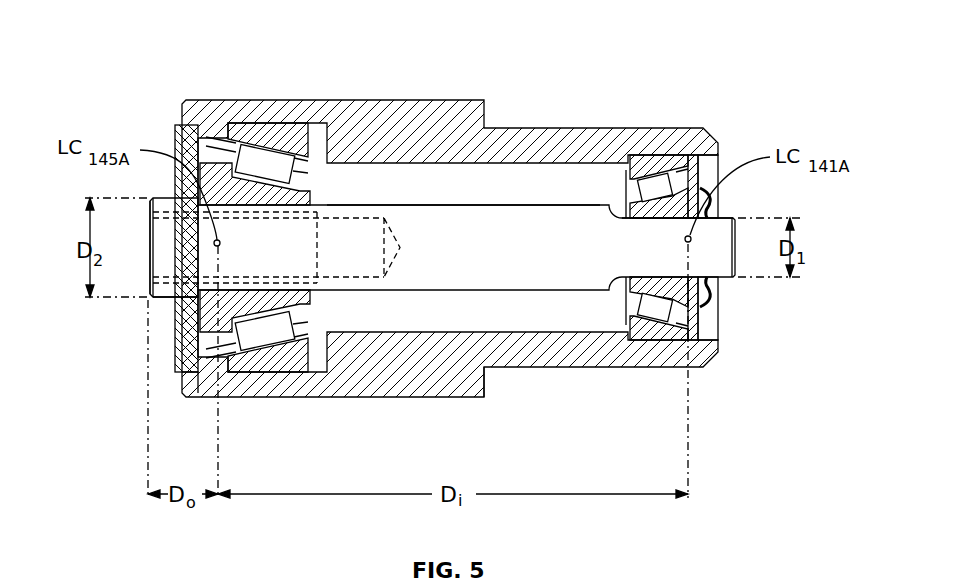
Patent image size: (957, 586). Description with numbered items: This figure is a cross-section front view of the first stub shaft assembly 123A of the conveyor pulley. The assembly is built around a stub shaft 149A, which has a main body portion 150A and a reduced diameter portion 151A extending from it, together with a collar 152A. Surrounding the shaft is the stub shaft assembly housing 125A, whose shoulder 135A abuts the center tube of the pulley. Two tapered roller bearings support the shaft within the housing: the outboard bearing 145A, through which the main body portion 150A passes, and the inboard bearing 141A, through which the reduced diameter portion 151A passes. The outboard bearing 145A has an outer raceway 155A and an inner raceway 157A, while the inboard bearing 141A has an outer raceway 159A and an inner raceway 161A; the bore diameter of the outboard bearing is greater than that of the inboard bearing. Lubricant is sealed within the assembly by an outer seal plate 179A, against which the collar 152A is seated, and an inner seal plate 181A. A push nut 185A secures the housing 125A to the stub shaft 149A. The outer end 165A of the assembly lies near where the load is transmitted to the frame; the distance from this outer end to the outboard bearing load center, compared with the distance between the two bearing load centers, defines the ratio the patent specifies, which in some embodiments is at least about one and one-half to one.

The first stub shaft assembly 123A is at (203, 76).
The stub shaft assembly housing 125A is at (405, 100).
The shoulder 135A is at (485, 383).
The inboard bearing 141A is at (622, 195).
The outboard bearing 145A is at (267, 246).
The stub shaft 149A is at (425, 280).
The main body portion 150A is at (388, 307).
The reduced diameter portion 151A is at (665, 262).
The collar 152A is at (167, 270).
The outer raceway 155A is at (285, 366).
The inner raceway 157A is at (194, 382).
The outer raceway 159A is at (640, 160).
The inner raceway 161A is at (628, 203).
The outer end 165A is at (148, 227).
The outer seal plate 179A is at (183, 128).
The inner seal plate 181A is at (700, 328).
The push nut 185A is at (708, 203).